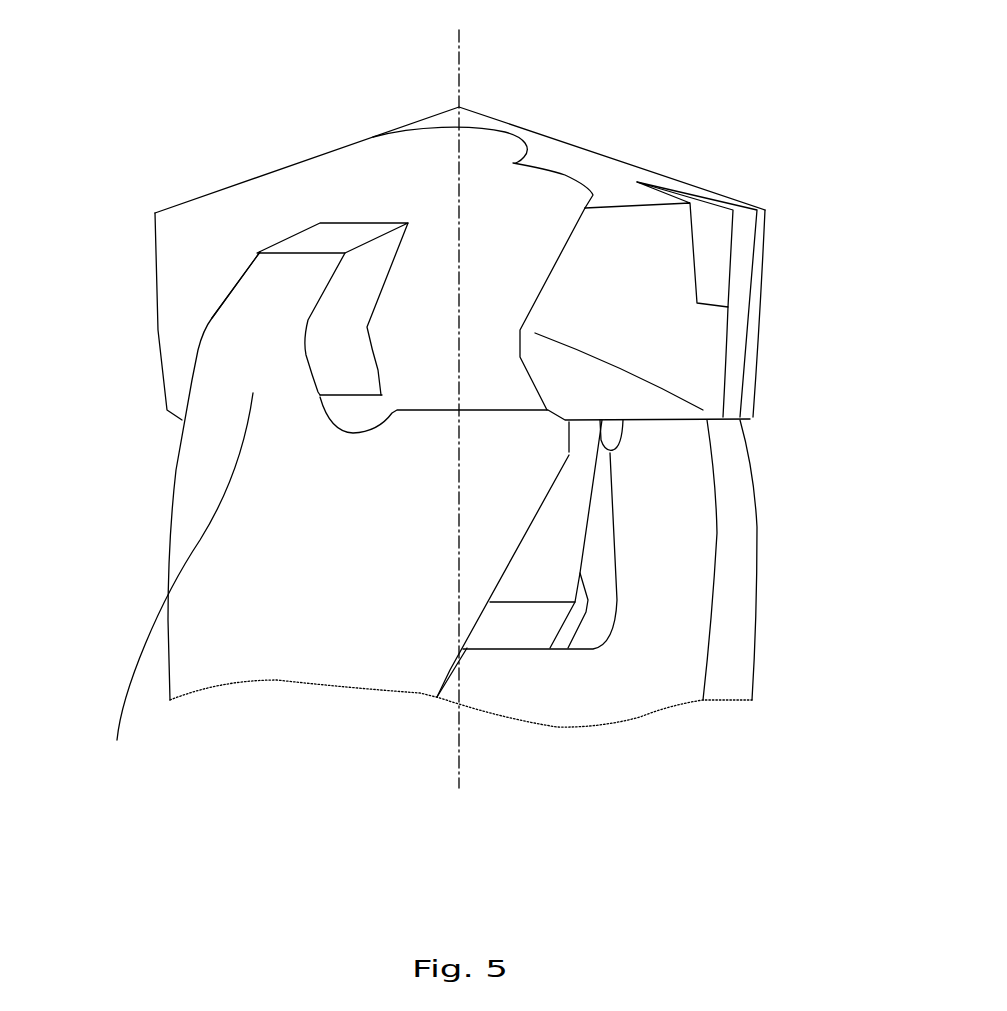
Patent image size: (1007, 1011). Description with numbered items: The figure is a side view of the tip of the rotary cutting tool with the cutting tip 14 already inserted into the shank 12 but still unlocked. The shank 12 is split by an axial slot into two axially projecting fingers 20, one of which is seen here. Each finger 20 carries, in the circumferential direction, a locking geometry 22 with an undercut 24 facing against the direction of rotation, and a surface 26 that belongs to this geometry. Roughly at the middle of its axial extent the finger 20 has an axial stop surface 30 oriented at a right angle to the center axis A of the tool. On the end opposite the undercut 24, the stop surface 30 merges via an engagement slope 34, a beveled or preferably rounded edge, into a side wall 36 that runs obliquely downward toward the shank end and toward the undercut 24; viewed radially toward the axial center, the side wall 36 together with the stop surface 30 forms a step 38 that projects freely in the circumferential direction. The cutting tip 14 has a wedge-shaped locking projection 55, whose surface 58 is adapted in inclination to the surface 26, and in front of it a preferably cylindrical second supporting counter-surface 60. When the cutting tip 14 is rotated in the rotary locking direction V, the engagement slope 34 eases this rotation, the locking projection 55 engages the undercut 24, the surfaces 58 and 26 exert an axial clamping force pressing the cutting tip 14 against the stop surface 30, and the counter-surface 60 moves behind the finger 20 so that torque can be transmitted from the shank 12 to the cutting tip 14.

The shank 12 is at (160, 560).
The cutting tip 14 is at (533, 98).
The finger 20 is at (178, 582).
The locking geometry 22 is at (197, 325).
The undercut 24 is at (308, 320).
The surface 26 is at (360, 280).
The stop surface 30 is at (428, 402).
The engagement slope 34 is at (557, 450).
The side wall 36 is at (470, 673).
The step 38 is at (527, 515).
The locking projection 55 is at (703, 410).
The surface 58 is at (537, 282).
The second supporting counter-surface 60 is at (527, 195).
The center axis A is at (449, 421).
The rotary locking direction V is at (613, 305).